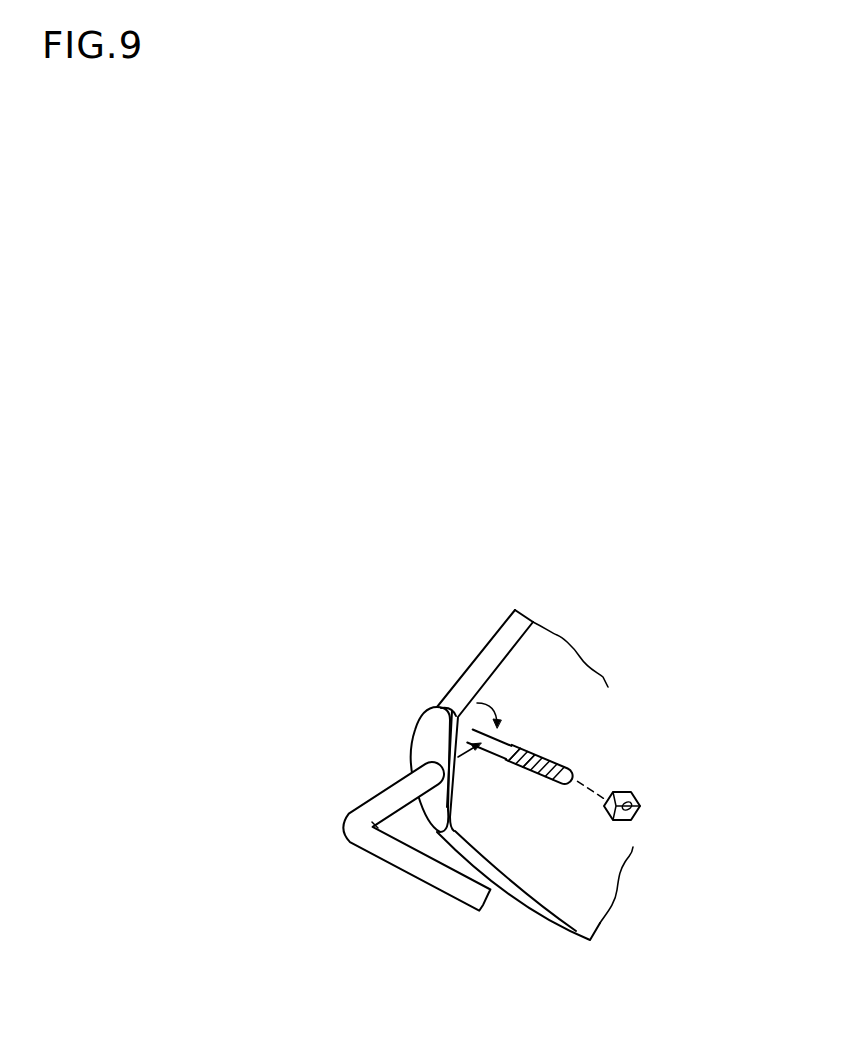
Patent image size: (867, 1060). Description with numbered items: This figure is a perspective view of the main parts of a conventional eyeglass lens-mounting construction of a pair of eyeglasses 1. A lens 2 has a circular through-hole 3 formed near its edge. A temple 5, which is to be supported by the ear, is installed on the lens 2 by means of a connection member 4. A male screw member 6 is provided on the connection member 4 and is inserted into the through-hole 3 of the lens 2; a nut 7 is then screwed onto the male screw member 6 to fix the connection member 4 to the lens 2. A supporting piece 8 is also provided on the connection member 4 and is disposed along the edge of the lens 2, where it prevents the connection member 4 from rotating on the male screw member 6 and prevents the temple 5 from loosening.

The pair of eyeglasses 1 is at (298, 409).
The lens 2 is at (557, 677).
The through-hole 3 is at (512, 731).
The connection member 4 is at (473, 717).
The temple 5 is at (443, 882).
The male screw member 6 is at (550, 757).
The nut 7 is at (641, 804).
The supporting piece 8 is at (434, 734).